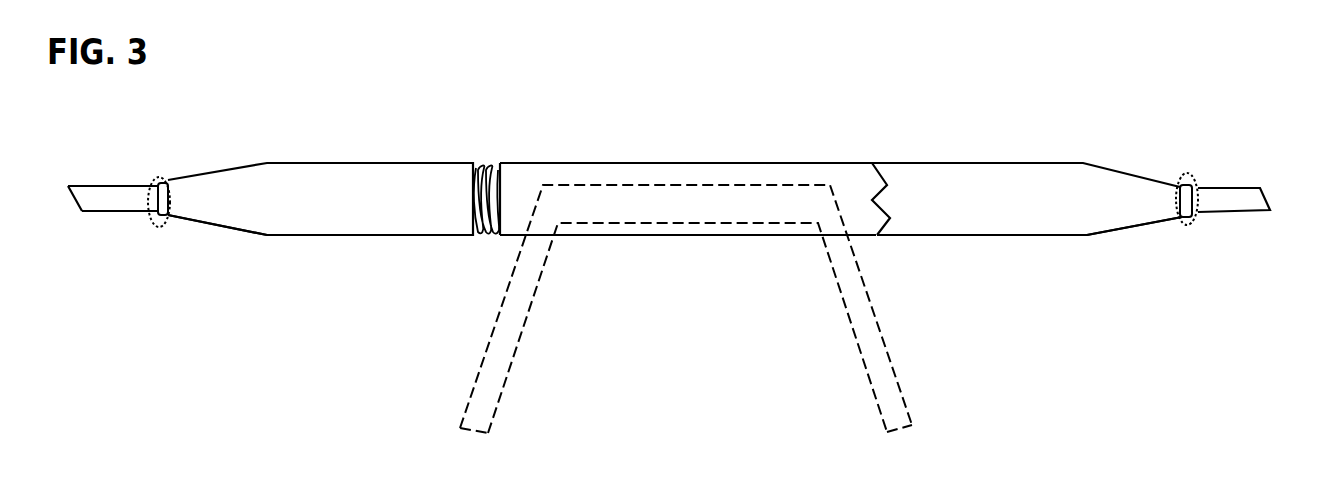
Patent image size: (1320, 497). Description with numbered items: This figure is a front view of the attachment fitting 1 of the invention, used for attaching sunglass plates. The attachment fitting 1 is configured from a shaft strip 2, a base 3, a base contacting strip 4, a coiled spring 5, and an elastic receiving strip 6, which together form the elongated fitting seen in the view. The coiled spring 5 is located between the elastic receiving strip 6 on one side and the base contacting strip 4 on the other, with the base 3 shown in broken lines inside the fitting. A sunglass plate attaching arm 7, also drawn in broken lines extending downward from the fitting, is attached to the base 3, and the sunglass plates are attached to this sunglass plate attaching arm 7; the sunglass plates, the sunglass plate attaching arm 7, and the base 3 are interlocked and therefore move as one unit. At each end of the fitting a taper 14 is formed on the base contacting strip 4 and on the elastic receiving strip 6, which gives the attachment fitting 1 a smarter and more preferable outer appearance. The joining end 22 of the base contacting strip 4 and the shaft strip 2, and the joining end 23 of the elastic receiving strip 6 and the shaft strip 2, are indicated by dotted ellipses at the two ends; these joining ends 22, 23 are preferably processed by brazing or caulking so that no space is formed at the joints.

The attachment fitting 1 is at (803, 162).
The shaft strip 2 is at (1230, 188).
The base 3 is at (680, 162).
The base contacting strip 4 is at (1010, 163).
The coiled spring 5 is at (487, 167).
The elastic receiving strip 6 is at (307, 163).
The sunglass plate attaching arm 7 is at (883, 360).
The taper 14 is at (213, 225).
The joining end 22 is at (1187, 173).
The joining end 23 is at (158, 177).